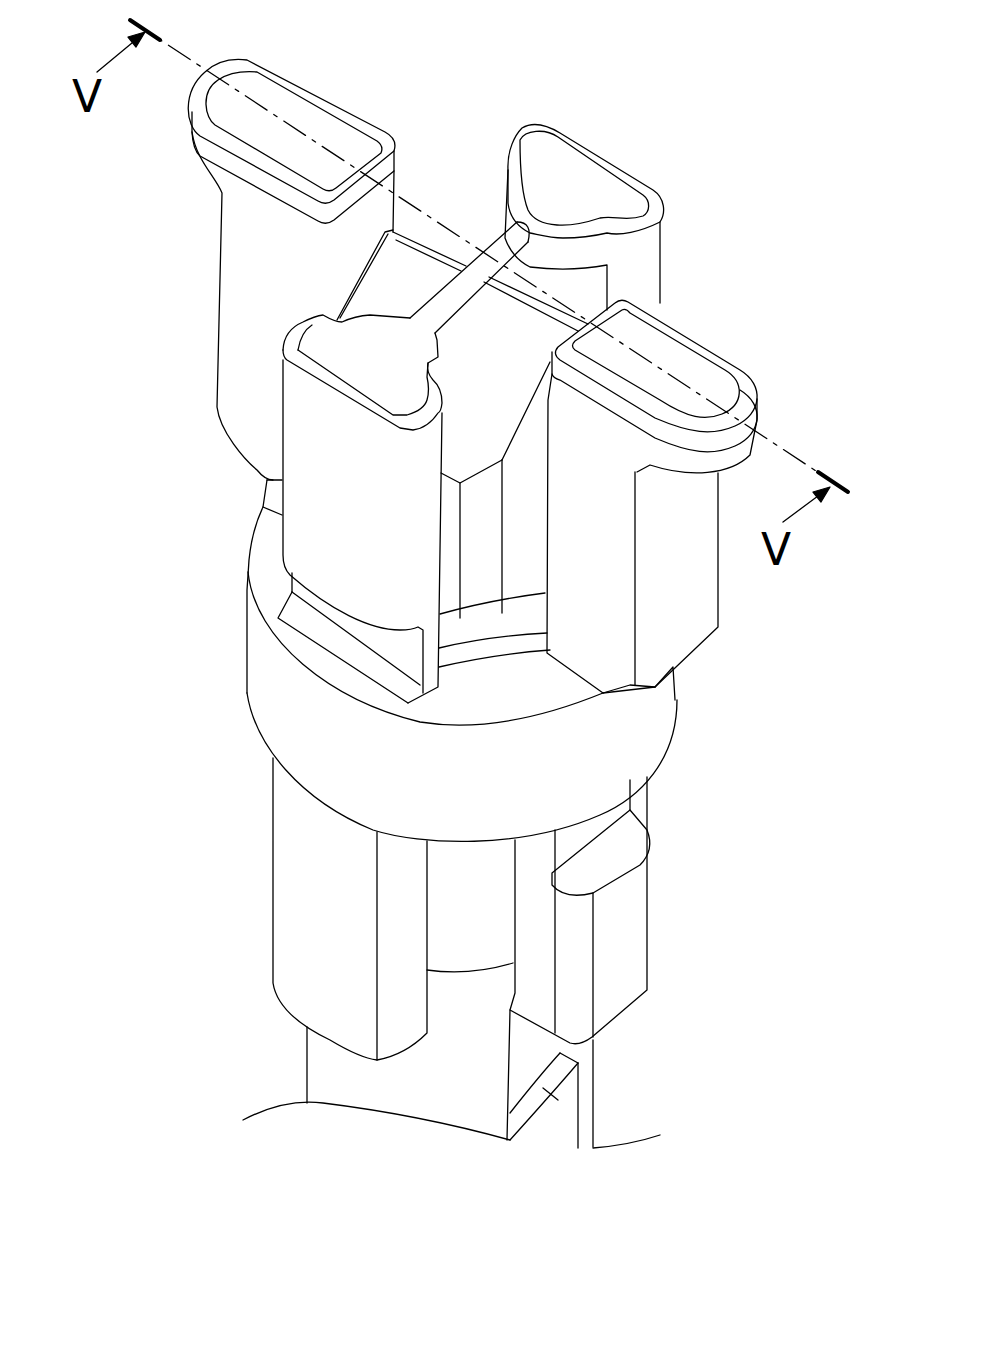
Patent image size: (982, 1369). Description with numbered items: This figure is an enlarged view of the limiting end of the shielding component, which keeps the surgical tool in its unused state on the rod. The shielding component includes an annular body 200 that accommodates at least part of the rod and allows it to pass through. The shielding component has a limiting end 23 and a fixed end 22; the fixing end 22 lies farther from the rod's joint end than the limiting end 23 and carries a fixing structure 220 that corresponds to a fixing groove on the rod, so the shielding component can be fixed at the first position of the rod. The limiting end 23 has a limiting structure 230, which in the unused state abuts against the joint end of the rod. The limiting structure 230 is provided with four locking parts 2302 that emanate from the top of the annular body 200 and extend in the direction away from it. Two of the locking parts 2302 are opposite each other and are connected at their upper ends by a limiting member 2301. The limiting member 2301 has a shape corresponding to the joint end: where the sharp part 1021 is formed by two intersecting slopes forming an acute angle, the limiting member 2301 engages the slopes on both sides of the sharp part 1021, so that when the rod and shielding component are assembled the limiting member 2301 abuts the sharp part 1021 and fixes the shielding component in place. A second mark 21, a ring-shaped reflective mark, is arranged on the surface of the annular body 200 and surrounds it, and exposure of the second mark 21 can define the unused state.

The annular body 200 is at (260, 563).
The second mark 21 is at (252, 648).
The fixing end 22 is at (622, 1017).
The fixing structure 220 is at (623, 938).
The limiting end 23 is at (609, 144).
The limiting structure 230 is at (602, 83).
The limiting member 2301 is at (503, 247).
The locking part 2302 is at (563, 152).
The sharp part 1021 is at (520, 315).